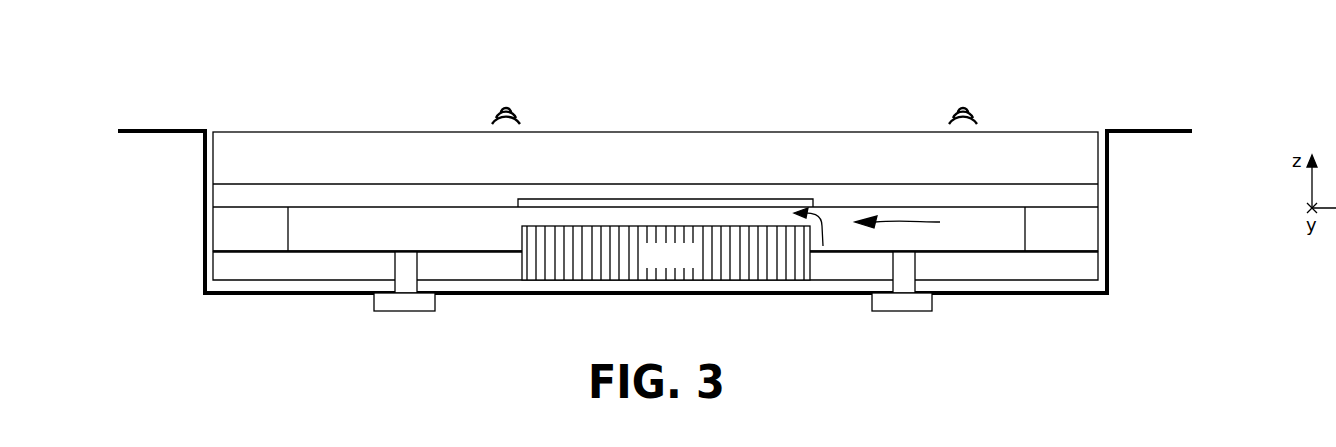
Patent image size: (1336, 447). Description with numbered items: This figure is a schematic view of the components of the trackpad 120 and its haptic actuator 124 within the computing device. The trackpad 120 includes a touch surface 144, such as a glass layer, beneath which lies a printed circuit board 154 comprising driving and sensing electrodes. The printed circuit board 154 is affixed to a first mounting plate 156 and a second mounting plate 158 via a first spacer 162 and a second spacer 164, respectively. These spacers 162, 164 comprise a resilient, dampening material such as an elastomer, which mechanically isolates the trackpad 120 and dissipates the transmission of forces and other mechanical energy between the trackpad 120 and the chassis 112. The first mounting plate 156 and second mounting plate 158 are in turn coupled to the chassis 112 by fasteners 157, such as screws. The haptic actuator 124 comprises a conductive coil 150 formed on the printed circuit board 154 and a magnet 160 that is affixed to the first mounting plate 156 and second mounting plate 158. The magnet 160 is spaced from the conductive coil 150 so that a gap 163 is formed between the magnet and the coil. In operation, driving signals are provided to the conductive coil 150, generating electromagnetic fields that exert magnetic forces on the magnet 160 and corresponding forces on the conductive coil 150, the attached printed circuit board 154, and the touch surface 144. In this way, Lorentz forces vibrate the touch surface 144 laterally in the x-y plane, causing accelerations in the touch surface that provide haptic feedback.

The chassis 112 is at (1160, 131).
The trackpad 120 is at (1013, 97).
The touch surface 144 is at (688, 132).
The printed circuit board 154 is at (422, 198).
The conductive coil 150 is at (542, 203).
The first spacer 162 is at (235, 227).
The second spacer 164 is at (1085, 228).
The first mounting plate 156 is at (235, 265).
The second mounting plate 158 is at (1085, 264).
The fasteners 157 is at (400, 312).
The magnet 160 is at (688, 266).
The gap 163 is at (830, 232).
The haptic actuator 124 is at (917, 224).